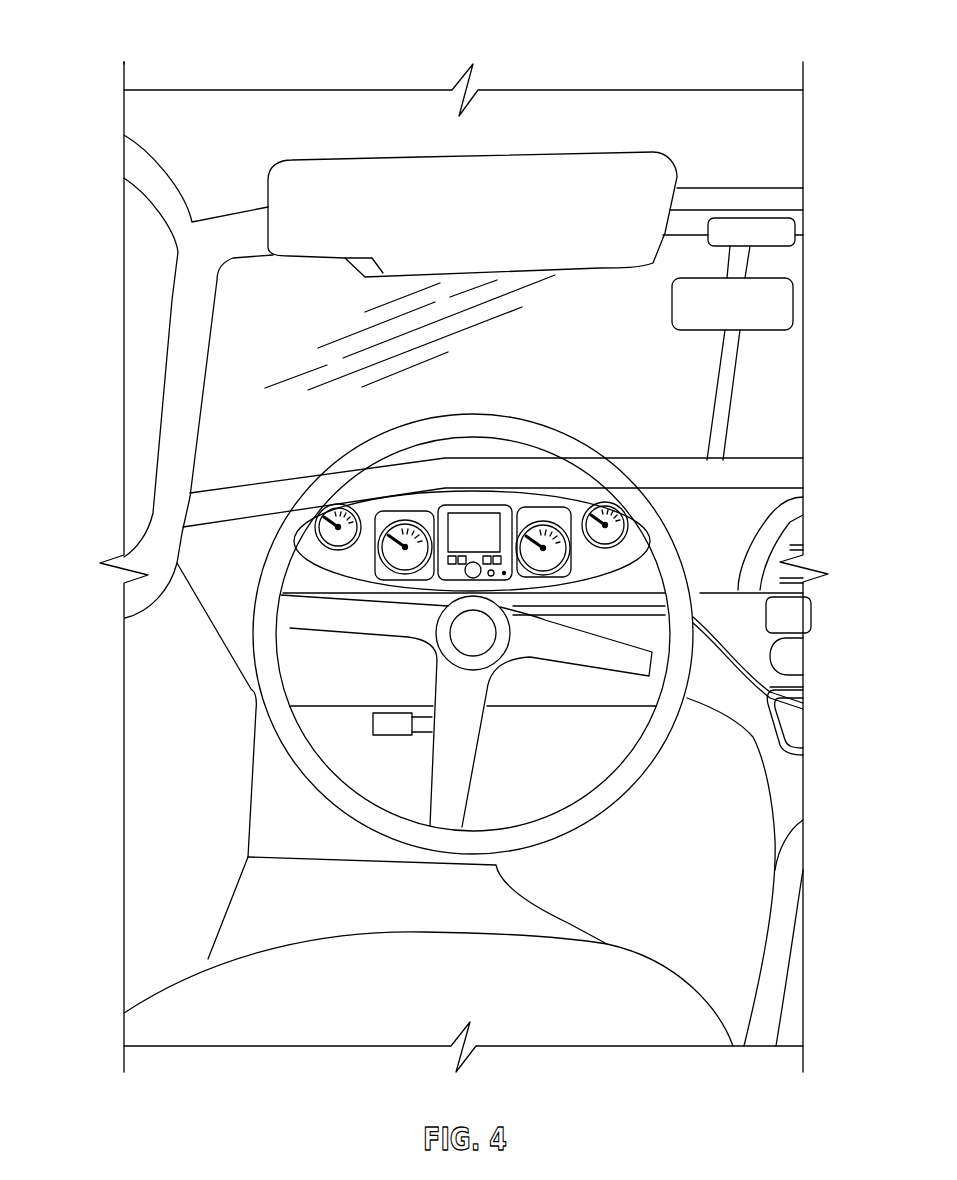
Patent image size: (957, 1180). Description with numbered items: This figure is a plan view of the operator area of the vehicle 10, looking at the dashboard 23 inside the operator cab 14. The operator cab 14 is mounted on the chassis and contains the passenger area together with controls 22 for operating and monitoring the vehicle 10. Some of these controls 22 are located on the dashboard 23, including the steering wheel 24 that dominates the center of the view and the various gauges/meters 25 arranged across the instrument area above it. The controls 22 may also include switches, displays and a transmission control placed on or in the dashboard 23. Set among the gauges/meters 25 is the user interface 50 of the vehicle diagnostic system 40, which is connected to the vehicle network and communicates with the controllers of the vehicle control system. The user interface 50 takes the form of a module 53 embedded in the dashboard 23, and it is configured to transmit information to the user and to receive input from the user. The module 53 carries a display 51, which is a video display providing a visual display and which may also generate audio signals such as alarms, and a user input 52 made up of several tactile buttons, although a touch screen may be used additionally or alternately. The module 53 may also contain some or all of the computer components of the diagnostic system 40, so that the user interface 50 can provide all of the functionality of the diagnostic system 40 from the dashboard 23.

The vehicle 10 is at (308, 120).
The operator cab 14 is at (158, 855).
The controls 22 is at (740, 512).
The dashboard 23 is at (668, 510).
The steering wheel 24 is at (293, 527).
The gauges/meters 25 is at (336, 516).
The vehicle diagnostic system 40 is at (432, 566).
The user interface 50 is at (458, 512).
The display 51 is at (481, 532).
The user input 52 is at (499, 572).
The module 53 is at (512, 562).